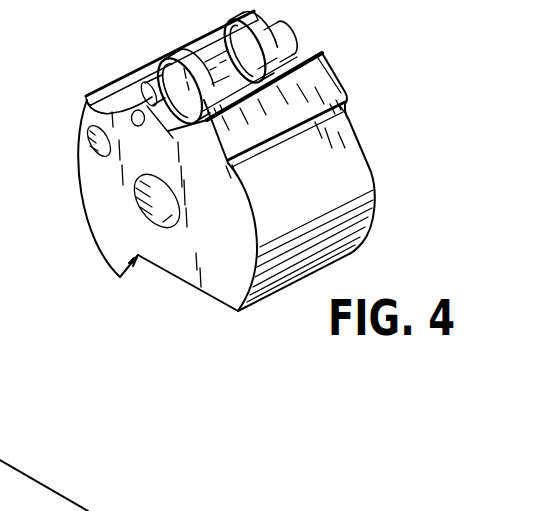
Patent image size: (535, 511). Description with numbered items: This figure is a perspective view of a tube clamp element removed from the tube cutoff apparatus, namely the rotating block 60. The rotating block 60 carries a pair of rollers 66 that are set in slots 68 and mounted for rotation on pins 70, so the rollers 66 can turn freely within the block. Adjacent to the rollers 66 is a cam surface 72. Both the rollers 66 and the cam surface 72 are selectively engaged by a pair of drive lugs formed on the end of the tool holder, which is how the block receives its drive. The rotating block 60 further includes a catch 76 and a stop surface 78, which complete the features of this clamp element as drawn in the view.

The rotating block 60 is at (228, 241).
The rollers 66 is at (218, 26).
The slots 68 is at (147, 61).
The pins 70 is at (84, 106).
The cam surface 72 is at (300, 52).
The catch 76 is at (346, 103).
The stop surface 78 is at (142, 262).